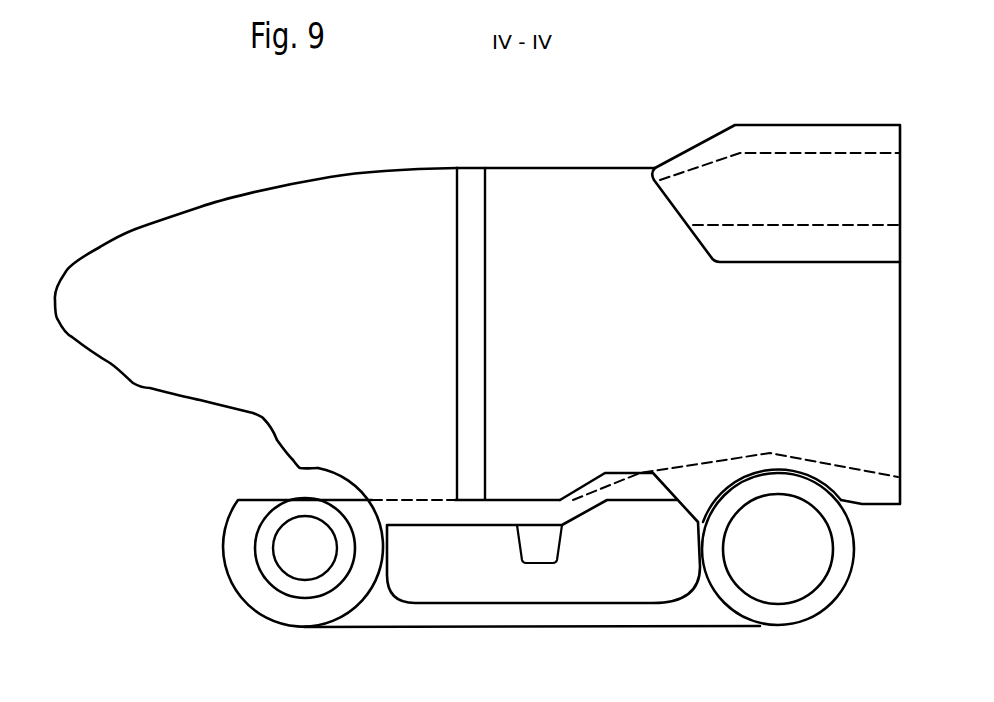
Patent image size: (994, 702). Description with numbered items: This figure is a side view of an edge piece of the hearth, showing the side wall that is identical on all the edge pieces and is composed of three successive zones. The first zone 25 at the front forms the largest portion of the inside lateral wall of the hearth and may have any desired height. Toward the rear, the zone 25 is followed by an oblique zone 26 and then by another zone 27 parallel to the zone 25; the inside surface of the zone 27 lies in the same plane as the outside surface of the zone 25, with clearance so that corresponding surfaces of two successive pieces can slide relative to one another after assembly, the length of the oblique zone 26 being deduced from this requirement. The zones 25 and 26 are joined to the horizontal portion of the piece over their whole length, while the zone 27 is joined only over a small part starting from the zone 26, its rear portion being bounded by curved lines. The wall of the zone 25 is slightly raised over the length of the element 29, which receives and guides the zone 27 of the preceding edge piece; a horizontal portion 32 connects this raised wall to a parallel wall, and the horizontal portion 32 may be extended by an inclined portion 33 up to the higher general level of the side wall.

The first zone 25 is at (852, 323).
The oblique zone 26 is at (473, 193).
The rear zone 27 is at (215, 228).
The element 29 is at (873, 200).
The horizontal portion 32 is at (853, 137).
The inclined portion 33 is at (703, 147).